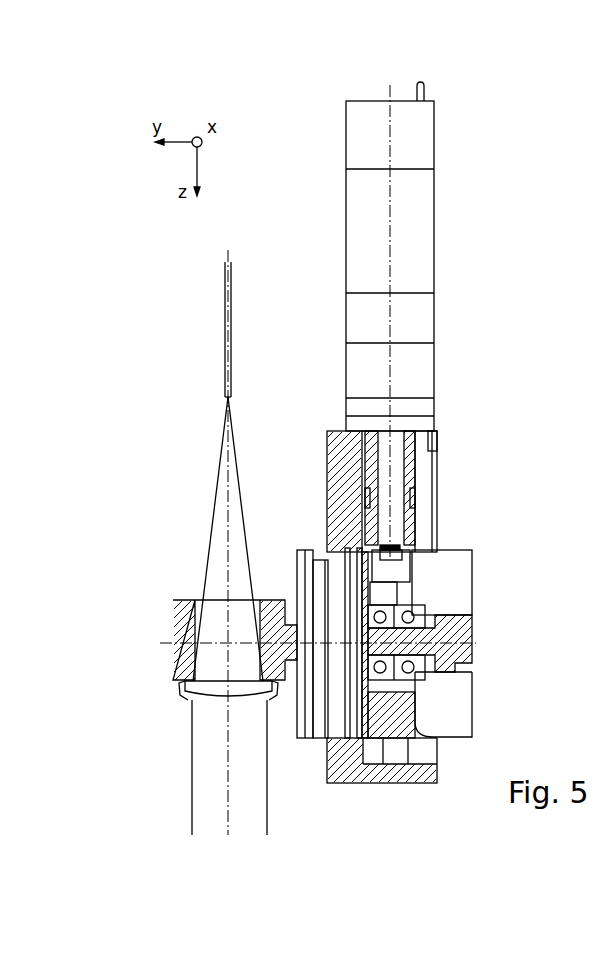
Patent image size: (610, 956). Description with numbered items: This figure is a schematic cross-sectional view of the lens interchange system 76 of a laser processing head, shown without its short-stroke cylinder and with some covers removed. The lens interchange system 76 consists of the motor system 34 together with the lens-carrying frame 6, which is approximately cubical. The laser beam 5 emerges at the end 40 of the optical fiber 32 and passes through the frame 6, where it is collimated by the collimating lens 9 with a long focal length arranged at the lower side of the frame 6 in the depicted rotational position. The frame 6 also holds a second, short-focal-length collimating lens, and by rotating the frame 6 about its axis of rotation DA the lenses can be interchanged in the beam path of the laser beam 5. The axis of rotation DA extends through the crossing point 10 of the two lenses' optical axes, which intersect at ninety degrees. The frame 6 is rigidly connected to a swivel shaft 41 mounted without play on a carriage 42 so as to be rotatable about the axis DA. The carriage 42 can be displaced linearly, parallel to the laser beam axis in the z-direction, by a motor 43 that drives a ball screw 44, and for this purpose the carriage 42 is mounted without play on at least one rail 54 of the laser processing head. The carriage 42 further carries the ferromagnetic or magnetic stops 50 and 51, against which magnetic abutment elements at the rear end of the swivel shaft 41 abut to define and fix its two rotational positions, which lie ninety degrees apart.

The laser beam 5 is at (220, 466).
The frame 6 is at (167, 600).
The collimating lens 9 is at (196, 700).
The crossing point 10 is at (223, 643).
The optical fiber 32 is at (226, 340).
The motor system 34 is at (462, 530).
The end 40 is at (228, 397).
The swivel shaft 41 is at (425, 737).
The carriage 42 is at (342, 575).
The motor 43 is at (415, 385).
The ball screw 44 is at (400, 468).
The stop 50 is at (460, 568).
The stop 51 is at (460, 700).
The rail 54 is at (372, 545).
The lens interchange system 76 is at (100, 572).
The axis of rotation DA is at (332, 633).